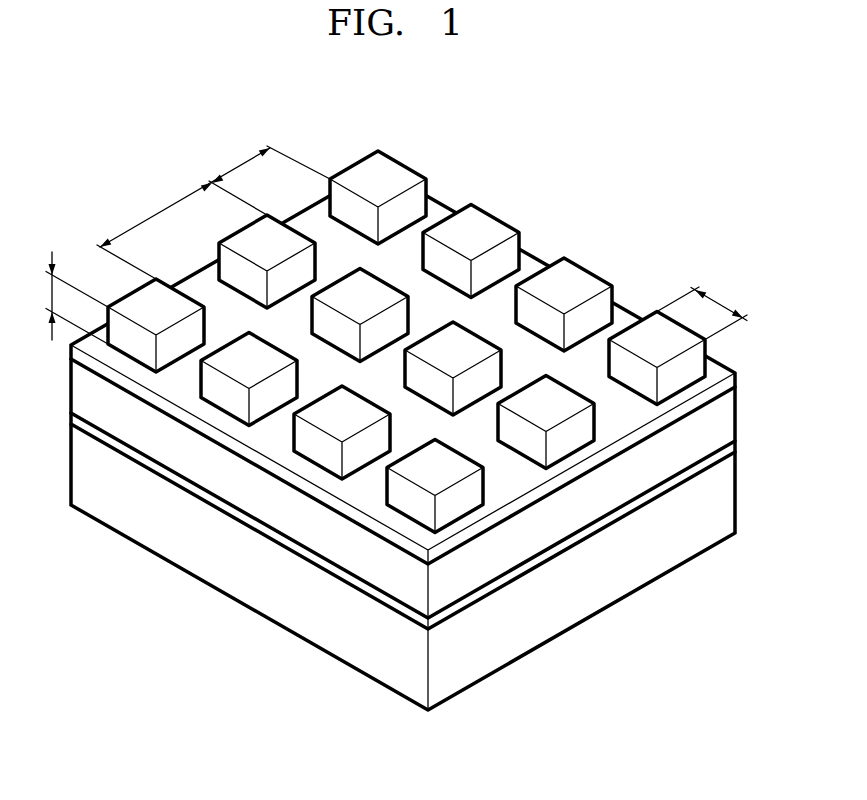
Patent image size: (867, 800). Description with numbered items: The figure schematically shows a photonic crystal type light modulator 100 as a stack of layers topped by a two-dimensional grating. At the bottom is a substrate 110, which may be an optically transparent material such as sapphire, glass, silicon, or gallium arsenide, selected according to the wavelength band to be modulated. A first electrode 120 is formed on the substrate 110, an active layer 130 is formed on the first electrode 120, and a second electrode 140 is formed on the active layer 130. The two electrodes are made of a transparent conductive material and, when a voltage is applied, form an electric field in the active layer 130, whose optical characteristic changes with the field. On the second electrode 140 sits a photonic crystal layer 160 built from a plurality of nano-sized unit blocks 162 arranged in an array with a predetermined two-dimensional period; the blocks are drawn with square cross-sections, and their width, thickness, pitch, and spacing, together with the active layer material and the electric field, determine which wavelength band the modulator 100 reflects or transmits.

The photonic crystal type light modulator 100 is at (414, 399).
The substrate 110 is at (732, 500).
The first electrode 120 is at (732, 450).
The active layer 130 is at (732, 417).
The second electrode 140 is at (732, 385).
The photonic crystal layer 160 is at (406, 342).
The unit block 162 is at (485, 227).